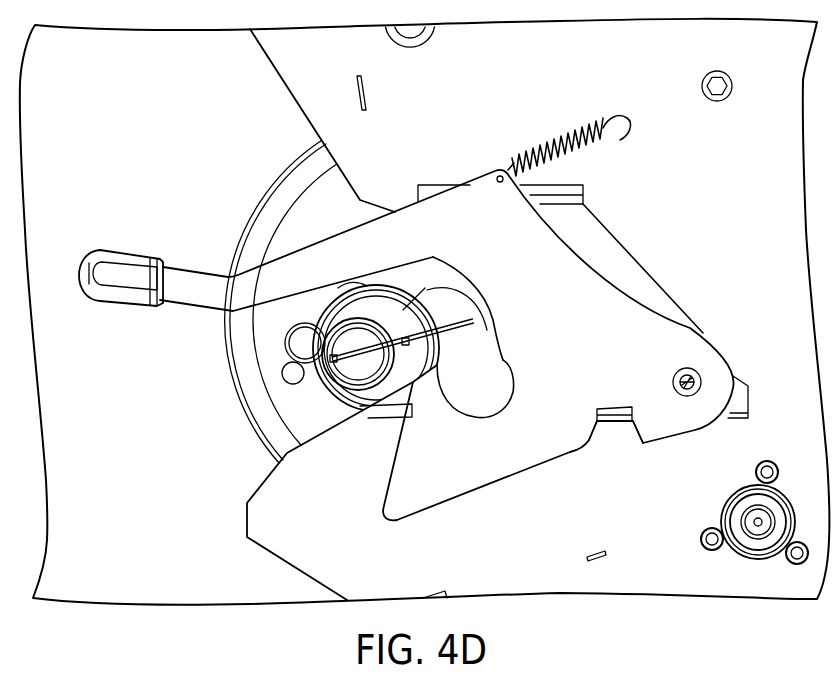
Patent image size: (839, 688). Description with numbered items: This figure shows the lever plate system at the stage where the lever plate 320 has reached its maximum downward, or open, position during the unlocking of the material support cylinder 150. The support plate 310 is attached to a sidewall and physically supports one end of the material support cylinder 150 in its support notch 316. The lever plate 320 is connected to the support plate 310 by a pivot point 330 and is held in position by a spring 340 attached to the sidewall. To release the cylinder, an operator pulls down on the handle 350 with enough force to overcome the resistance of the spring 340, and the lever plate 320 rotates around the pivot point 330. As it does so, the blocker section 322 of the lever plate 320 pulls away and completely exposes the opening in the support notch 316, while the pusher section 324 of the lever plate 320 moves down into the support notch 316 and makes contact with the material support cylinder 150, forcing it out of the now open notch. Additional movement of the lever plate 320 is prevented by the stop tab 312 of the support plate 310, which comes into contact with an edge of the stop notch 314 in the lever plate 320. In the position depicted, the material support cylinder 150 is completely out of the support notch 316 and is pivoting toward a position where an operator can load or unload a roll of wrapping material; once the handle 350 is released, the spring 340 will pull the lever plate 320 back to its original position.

The material support cylinder 150 is at (265, 373).
The support plate 310 is at (570, 220).
The stop tab 312 is at (607, 432).
The stop notch 314 is at (627, 452).
The support notch 316 is at (513, 360).
The lever plate 320 is at (580, 307).
The blocker section 322 is at (420, 422).
The pusher section 324 is at (480, 292).
The pivot point 330 is at (675, 380).
The spring 340 is at (568, 135).
The handle 350 is at (128, 272).